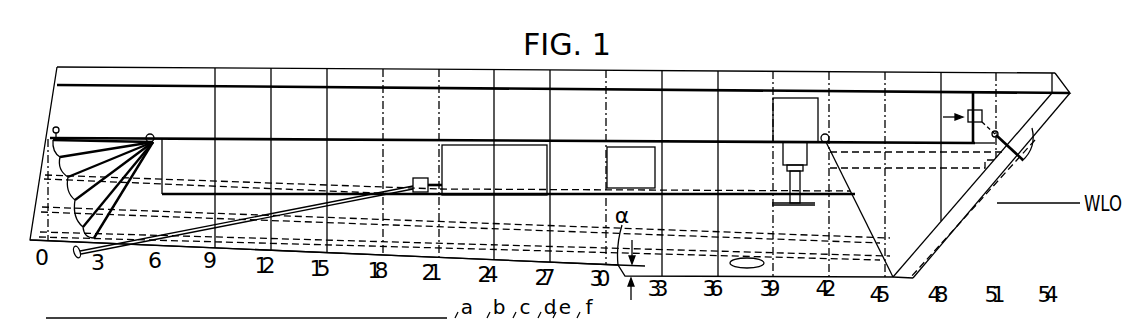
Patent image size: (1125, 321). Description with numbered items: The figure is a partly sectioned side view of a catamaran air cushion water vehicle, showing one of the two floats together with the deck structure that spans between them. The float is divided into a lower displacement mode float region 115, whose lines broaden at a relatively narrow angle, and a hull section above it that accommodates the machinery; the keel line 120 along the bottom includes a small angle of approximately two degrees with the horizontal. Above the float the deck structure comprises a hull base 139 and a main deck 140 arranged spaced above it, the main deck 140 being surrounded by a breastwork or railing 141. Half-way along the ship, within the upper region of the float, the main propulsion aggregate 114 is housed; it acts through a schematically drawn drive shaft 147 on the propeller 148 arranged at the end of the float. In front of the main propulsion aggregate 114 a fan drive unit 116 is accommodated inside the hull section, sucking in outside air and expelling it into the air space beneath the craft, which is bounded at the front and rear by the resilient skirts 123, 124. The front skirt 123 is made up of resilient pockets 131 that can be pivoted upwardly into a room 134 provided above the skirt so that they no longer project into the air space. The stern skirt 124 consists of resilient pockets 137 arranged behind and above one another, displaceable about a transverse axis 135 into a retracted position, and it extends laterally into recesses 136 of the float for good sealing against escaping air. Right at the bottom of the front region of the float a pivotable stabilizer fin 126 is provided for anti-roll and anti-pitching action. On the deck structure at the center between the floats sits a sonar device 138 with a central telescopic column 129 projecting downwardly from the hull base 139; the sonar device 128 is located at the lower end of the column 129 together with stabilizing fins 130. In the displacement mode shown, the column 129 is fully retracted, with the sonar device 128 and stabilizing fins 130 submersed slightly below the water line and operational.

The main propulsion aggregate 114 is at (513, 155).
The displacement mode float region 115 is at (352, 232).
The fan drive unit 116 is at (622, 156).
The keel line 120 is at (233, 250).
The front resilient skirt 123 is at (979, 213).
The stern resilient skirt 124 is at (128, 210).
The stabilizer fin 126 is at (745, 260).
The sonar device 128 is at (790, 207).
The central telescopic column 129 is at (783, 180).
The stabilizing fin 130 is at (813, 207).
The resilient pocket 131 is at (953, 227).
The room 134 is at (925, 148).
The transverse axis 135 is at (157, 140).
The recess 136 is at (140, 318).
The resilient pocket 137 is at (90, 160).
The sonar device 138 is at (790, 110).
The hull base 139 is at (286, 137).
The main deck 140 is at (405, 86).
The breastwork or railing 141 is at (296, 67).
The drive shaft 147 is at (302, 205).
The propeller 148 is at (78, 257).